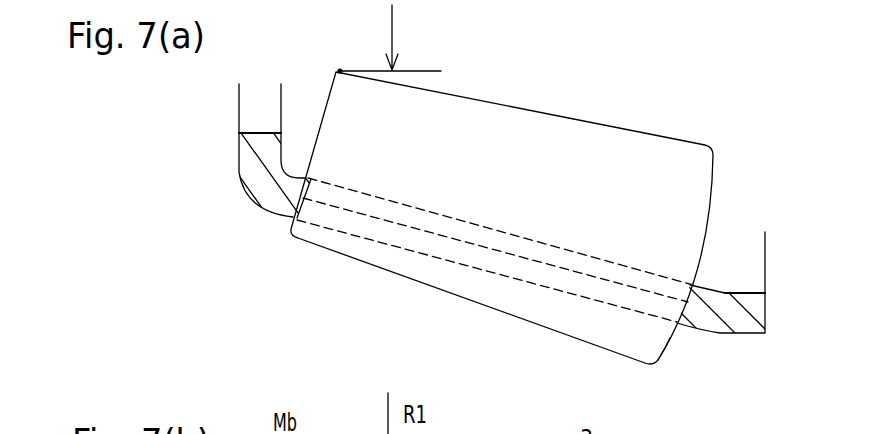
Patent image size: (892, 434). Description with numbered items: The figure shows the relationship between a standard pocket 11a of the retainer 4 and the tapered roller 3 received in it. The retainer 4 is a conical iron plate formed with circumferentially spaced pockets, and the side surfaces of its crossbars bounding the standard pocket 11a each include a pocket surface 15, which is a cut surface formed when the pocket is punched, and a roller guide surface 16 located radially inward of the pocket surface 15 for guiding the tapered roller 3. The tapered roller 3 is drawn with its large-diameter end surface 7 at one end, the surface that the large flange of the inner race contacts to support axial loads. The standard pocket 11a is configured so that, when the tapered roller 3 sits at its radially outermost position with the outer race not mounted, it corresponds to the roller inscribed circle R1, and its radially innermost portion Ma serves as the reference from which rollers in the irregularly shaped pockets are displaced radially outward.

The tapered roller 3 is at (567, 123).
The retainer 4 is at (733, 330).
The large-diameter end surface 7 is at (666, 347).
The standard pocket 11a is at (298, 214).
The pocket surface 15 is at (447, 262).
The roller guide surface 16 is at (538, 263).
The radially innermost portion Ma is at (340, 71).
The roller inscribed circle R1 is at (407, 37).